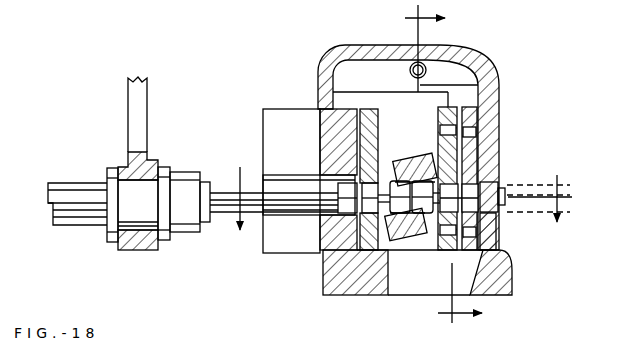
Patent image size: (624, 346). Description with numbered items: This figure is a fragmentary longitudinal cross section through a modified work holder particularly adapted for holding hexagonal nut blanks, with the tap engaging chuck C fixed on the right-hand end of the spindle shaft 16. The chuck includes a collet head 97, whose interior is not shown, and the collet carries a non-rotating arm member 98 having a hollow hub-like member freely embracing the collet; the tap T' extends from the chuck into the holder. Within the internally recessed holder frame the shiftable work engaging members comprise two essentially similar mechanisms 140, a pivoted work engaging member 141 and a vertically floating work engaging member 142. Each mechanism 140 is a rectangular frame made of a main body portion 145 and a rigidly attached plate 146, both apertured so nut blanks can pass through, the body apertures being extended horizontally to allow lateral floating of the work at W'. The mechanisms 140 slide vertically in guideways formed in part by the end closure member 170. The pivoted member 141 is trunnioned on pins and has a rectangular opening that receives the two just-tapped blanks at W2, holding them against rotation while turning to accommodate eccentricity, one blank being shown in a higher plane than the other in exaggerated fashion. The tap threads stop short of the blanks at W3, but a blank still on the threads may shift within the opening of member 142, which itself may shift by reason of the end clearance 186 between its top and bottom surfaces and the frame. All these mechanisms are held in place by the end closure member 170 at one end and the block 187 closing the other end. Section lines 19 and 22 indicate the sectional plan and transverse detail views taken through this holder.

The non-rotating arm member 98 is at (138, 110).
The spindle shaft 16 is at (80, 192).
The collet head 97 is at (138, 201).
The tap engaging chuck C is at (178, 184).
The shaft T' is at (325, 190).
The section line 19— 19 is at (401, 212).
The section line 22— 22 is at (455, 165).
The block 187 is at (326, 137).
The clearance 186 is at (370, 112).
The vertically floating work engaging member 142 is at (378, 122).
The pivoted work engaging member 141 is at (422, 182).
The mechanisms 140 is at (445, 110).
The plate 146 is at (503, 140).
The main body portion 145 is at (500, 218).
The end closure member 170 is at (496, 240).
The work blanks at W1 W' is at (416, 229).
The work blanks at W2 is at (428, 173).
The work blanks at W3 is at (320, 222).